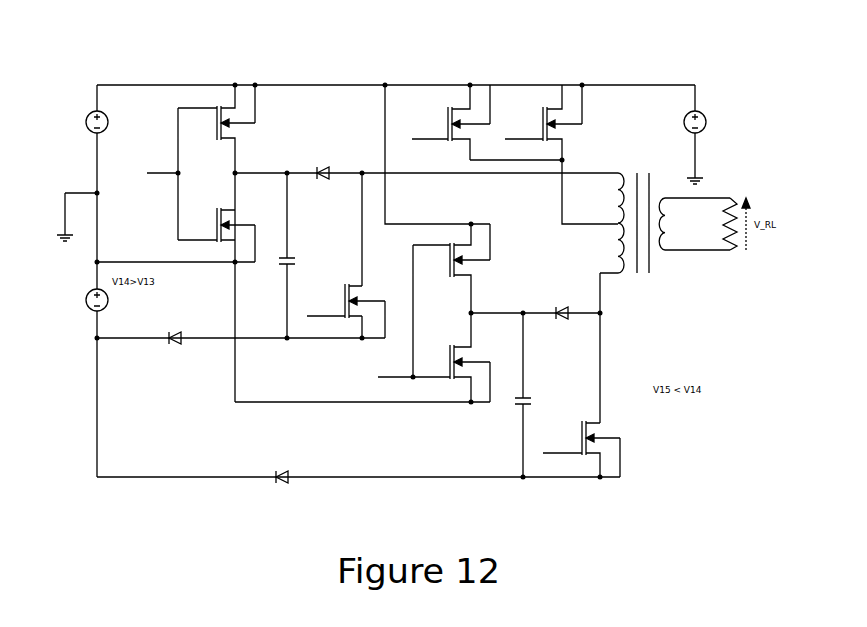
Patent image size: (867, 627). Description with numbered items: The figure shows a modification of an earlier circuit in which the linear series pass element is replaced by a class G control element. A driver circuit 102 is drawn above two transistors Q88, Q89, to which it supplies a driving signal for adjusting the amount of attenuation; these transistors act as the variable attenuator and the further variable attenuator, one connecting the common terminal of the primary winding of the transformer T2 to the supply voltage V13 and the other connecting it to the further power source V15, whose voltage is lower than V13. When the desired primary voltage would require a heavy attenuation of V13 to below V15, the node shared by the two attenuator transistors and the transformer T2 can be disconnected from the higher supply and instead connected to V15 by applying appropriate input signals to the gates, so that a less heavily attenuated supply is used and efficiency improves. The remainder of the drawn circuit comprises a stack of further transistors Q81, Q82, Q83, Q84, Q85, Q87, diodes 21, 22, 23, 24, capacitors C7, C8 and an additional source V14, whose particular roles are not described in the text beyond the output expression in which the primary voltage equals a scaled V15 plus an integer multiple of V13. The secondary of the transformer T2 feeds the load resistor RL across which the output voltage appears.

The driver circuit 102 is at (544, 103).
The transistor Q81 is at (216, 162).
The transistor Q82 is at (176, 287).
The transistor Q83 is at (346, 255).
The transistor Q84 is at (451, 310).
The transistor Q85 is at (362, 357).
The transistor Q87 is at (581, 375).
The transistor Q88 is at (451, 122).
The transistor Q89 is at (543, 122).
The diode D21 21 is at (173, 332).
The diode D22 22 is at (323, 167).
The diode D23 23 is at (279, 472).
The diode D24 24 is at (560, 307).
The capacitor C7 is at (292, 255).
The capacitor C8 is at (528, 395).
The transformer T2 is at (665, 216).
The load resistor RL is at (721, 224).
The supply voltage V13 is at (86, 122).
The voltage source V14 is at (86, 300).
The further power source V15 is at (684, 134).